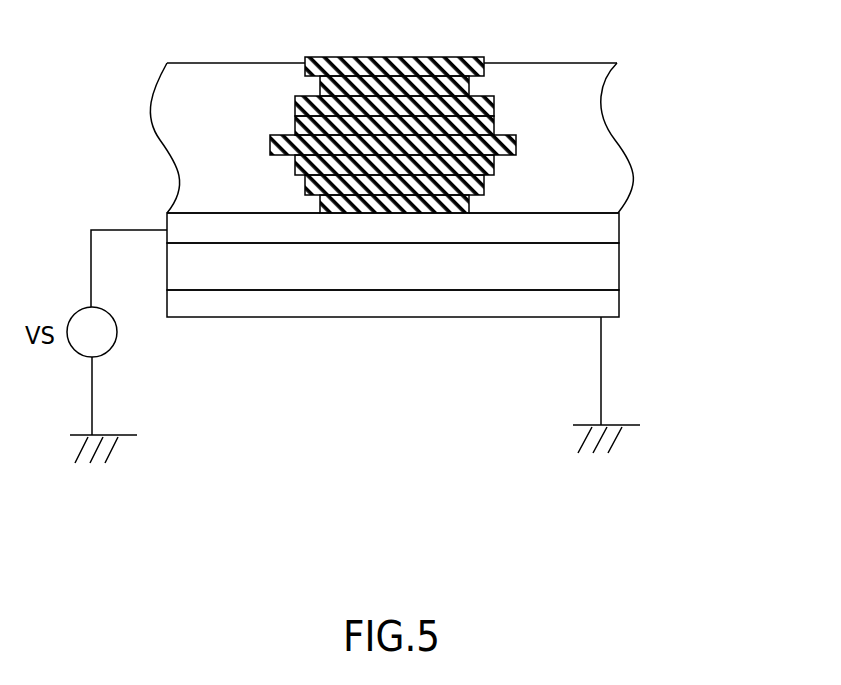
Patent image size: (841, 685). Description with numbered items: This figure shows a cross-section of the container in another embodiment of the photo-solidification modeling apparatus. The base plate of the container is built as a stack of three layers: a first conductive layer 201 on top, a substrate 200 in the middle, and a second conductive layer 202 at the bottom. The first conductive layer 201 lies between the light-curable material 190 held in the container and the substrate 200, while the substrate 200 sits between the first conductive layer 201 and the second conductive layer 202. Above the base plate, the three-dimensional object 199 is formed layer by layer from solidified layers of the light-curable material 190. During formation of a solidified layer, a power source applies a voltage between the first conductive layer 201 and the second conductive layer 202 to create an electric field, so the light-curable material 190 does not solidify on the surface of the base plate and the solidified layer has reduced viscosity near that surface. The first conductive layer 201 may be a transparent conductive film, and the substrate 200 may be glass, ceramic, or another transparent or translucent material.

The light-curable material 190 is at (588, 78).
The three-dimensional object 199 is at (520, 140).
The first conductive layer 201 is at (610, 233).
The substrate 200 is at (612, 260).
The second conductive layer 202 is at (612, 300).